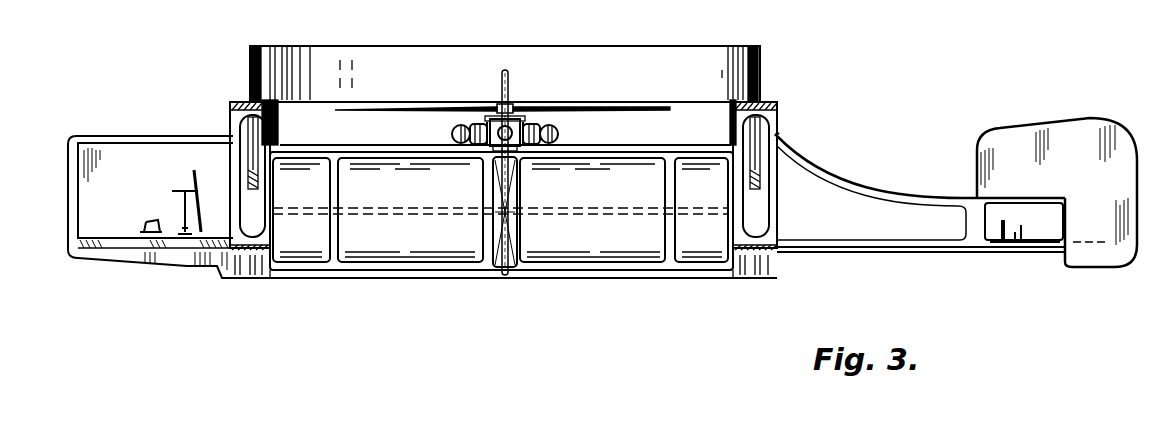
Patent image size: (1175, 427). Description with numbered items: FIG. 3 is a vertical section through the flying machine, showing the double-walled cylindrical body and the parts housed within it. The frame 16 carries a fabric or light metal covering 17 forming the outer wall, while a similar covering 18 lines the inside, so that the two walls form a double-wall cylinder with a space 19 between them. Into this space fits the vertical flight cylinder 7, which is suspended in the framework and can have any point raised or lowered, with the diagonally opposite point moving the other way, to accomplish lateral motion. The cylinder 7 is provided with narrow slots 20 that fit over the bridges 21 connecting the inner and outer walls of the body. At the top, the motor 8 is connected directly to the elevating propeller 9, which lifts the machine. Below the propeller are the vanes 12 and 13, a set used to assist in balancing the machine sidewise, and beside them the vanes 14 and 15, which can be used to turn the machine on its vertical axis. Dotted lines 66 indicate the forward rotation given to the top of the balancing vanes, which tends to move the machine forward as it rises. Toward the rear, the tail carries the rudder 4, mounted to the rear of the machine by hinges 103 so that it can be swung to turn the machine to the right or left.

The rudder 4 is at (1083, 130).
The vertical cylinder 7 is at (758, 50).
The motor 8 is at (560, 135).
The elevating propeller 9 is at (568, 108).
The vane 12 is at (410, 210).
The vane 13 is at (592, 210).
The vane 14 is at (307, 250).
The vane 15 is at (693, 252).
The frame 16 is at (779, 134).
The covering 17 is at (778, 136).
The inner covering 18 is at (284, 122).
The space 19 is at (248, 163).
The narrow slots 20 is at (253, 82).
The bridges 21 is at (232, 101).
The dotted lines 66 is at (492, 176).
The tail rotor drive 103 is at (1076, 226).